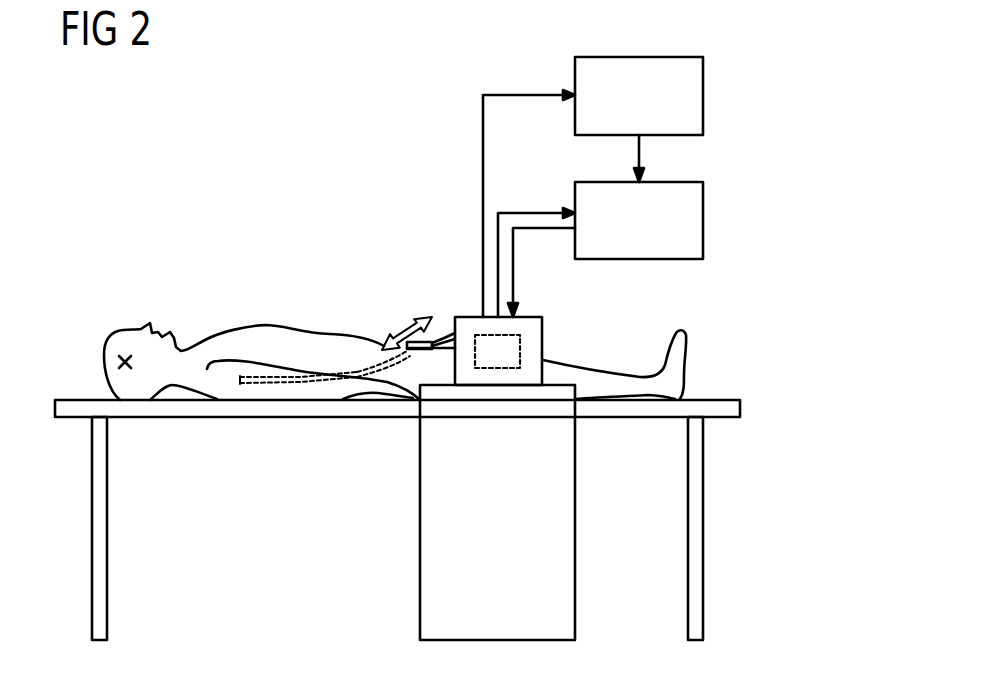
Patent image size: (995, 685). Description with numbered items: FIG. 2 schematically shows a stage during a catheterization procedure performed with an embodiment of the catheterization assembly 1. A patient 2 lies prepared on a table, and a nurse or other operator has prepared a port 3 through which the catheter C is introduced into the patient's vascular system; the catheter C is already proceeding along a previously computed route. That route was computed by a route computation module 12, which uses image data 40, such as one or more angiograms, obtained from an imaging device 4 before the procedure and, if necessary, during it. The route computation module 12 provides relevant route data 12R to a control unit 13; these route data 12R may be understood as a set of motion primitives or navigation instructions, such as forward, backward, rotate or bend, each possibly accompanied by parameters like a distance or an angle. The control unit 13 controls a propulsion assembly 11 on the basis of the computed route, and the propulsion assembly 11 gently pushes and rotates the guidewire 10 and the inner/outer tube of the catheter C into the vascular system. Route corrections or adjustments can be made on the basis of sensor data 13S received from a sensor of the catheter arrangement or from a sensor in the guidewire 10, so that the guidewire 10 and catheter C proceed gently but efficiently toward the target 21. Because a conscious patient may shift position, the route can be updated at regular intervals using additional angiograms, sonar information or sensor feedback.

The catheterization assembly 1 is at (530, 75).
The patient 2 is at (240, 330).
The port 3 is at (427, 351).
The imaging device 4 is at (703, 95).
The guidewire 10 is at (240, 384).
The propulsion assembly 11 is at (502, 369).
The route computation module 12 is at (703, 218).
The route data 12R is at (513, 267).
The control unit 13 is at (454, 316).
The sensor data 13S is at (529, 212).
The target 21 is at (118, 361).
The image data 40 is at (639, 150).
The catheter C is at (360, 370).